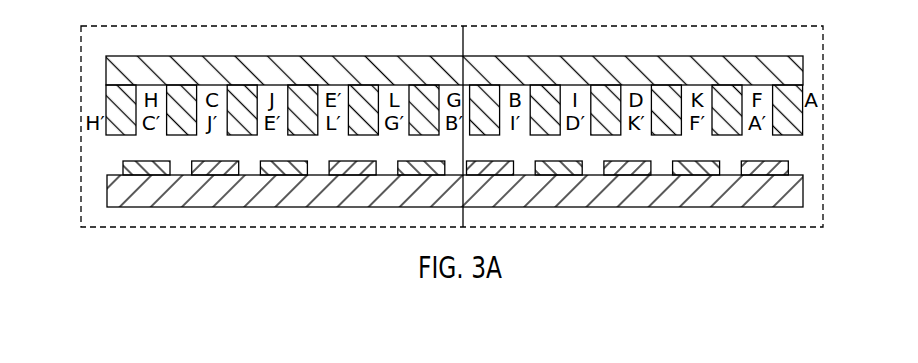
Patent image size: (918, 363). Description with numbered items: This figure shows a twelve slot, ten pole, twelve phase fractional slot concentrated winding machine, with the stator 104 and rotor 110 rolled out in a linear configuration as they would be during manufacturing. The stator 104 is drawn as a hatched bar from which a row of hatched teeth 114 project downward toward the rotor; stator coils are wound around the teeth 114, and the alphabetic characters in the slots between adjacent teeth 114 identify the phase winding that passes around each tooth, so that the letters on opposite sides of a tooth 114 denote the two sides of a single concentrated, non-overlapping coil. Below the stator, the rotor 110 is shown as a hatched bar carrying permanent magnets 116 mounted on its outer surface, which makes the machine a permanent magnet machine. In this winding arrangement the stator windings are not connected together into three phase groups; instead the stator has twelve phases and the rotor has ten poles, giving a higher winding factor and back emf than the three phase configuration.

The stator 104 is at (108, 70).
The teeth 114 is at (110, 93).
The rotor 110 is at (123, 207).
The permanent magnets 116 is at (170, 175).